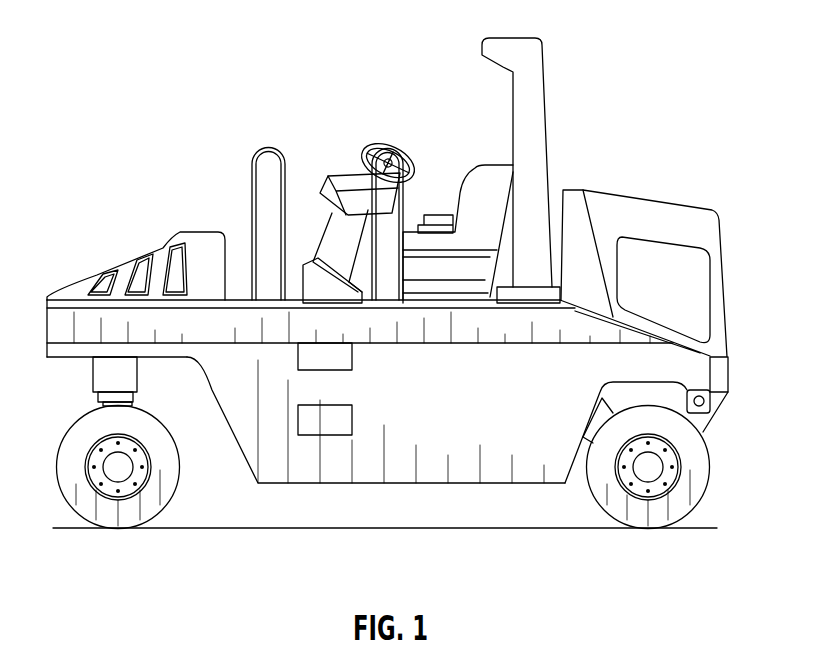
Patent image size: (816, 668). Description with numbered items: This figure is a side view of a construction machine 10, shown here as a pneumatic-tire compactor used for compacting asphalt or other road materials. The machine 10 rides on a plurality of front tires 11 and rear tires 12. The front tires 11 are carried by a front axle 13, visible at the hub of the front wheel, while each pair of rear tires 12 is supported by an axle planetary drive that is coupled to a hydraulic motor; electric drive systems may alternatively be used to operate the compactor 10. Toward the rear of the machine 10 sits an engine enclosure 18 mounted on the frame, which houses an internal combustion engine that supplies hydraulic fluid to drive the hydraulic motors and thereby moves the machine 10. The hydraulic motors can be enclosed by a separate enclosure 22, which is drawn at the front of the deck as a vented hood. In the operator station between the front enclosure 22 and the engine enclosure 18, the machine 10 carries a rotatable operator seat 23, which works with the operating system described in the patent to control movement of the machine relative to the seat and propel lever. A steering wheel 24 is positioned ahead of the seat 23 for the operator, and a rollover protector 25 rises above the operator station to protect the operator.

The construction machine 10 is at (398, 299).
The front tires 11 is at (99, 487).
The rear tires 12 is at (712, 478).
The front axle 13 is at (125, 478).
The engine enclosure 18 is at (662, 200).
The enclosure 22 is at (113, 268).
The rotatable seat 23 is at (475, 167).
The steering wheel 24 is at (372, 147).
The rollover protector 25 is at (548, 74).